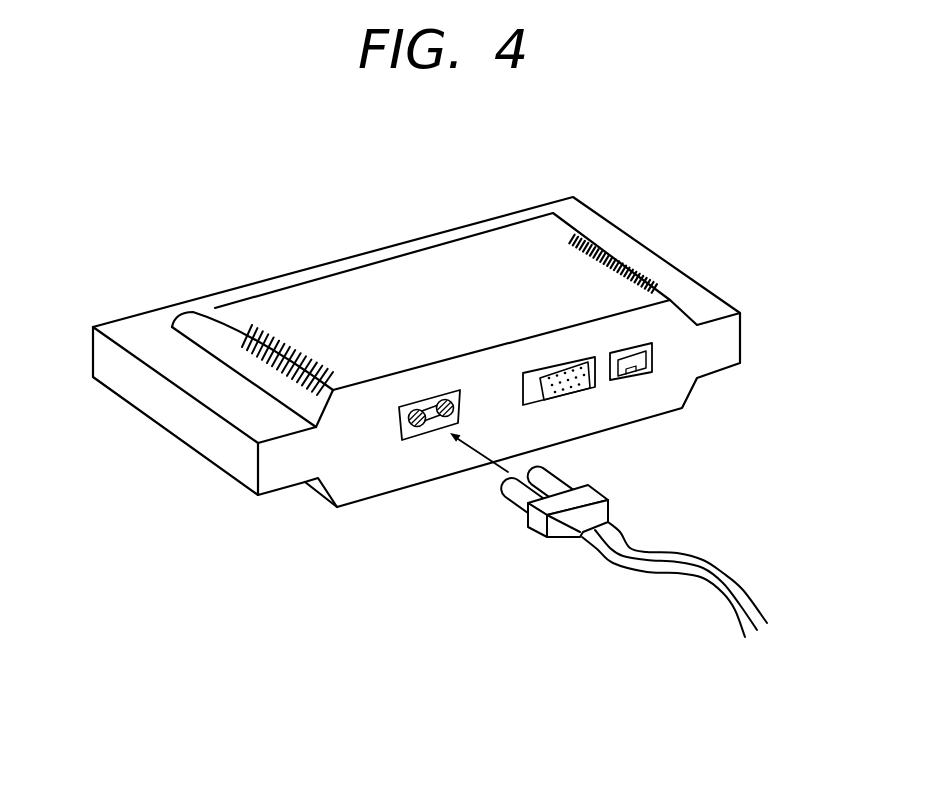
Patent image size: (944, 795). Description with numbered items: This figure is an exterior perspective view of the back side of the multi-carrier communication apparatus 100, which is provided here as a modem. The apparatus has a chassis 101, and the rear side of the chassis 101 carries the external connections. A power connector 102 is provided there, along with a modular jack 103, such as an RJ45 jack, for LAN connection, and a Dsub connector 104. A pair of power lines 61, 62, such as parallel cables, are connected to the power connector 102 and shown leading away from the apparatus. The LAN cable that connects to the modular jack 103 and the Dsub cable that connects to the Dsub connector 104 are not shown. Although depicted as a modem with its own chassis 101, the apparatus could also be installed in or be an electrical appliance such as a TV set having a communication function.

The multi-carrier communication apparatus 100 is at (415, 218).
The chassis 101 is at (242, 286).
The power connector 102 is at (422, 430).
The modular jack 103 is at (637, 373).
The Dsub connector 104 is at (570, 397).
The power line 61 is at (707, 568).
The power line 62 is at (695, 577).